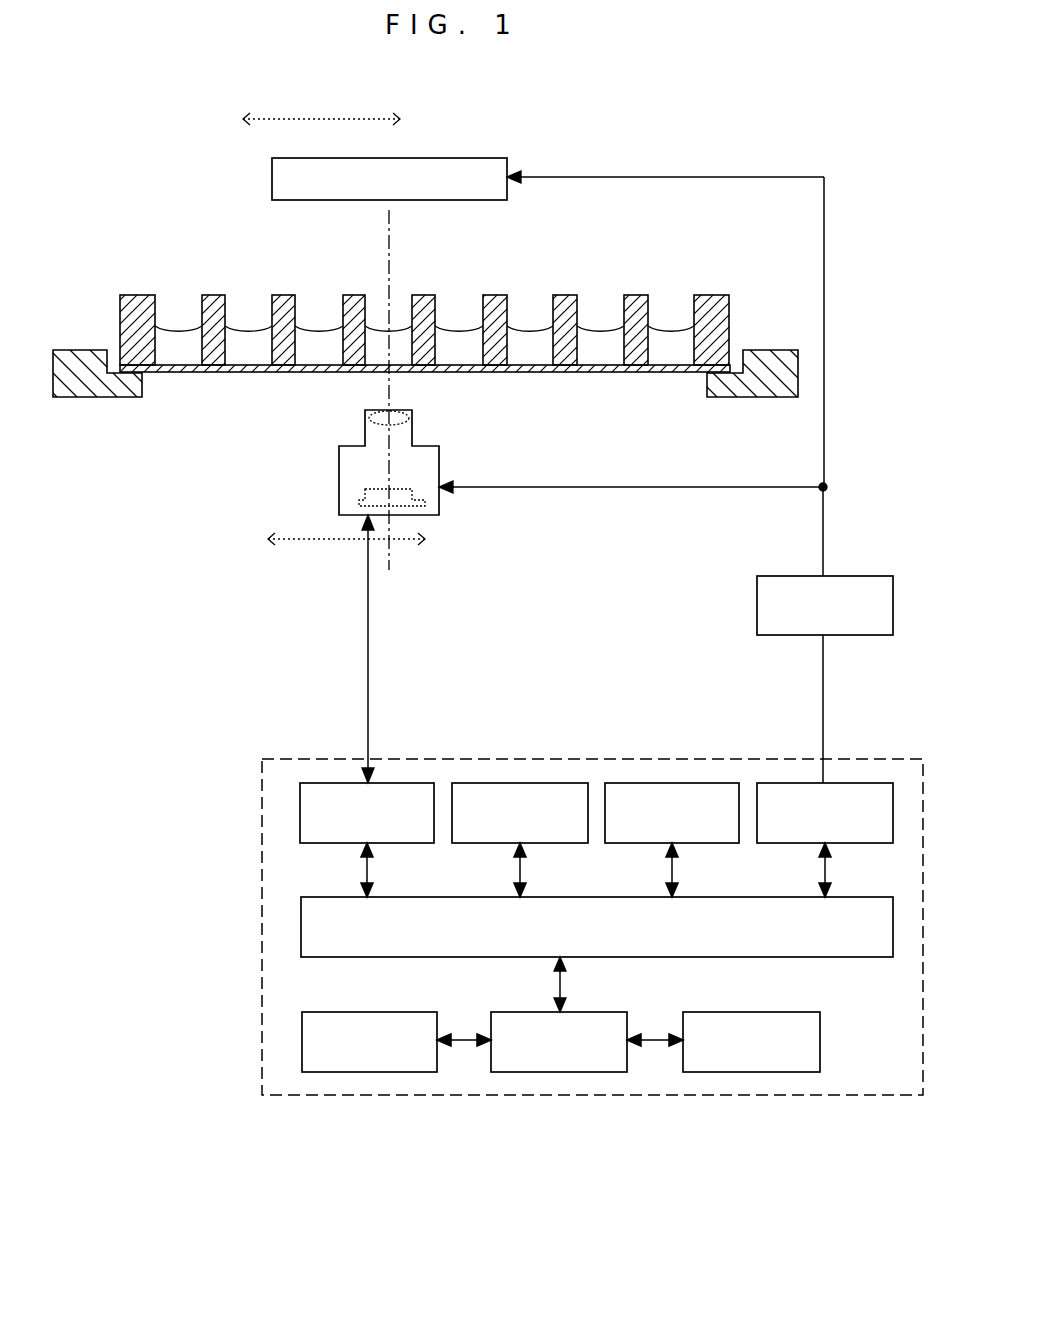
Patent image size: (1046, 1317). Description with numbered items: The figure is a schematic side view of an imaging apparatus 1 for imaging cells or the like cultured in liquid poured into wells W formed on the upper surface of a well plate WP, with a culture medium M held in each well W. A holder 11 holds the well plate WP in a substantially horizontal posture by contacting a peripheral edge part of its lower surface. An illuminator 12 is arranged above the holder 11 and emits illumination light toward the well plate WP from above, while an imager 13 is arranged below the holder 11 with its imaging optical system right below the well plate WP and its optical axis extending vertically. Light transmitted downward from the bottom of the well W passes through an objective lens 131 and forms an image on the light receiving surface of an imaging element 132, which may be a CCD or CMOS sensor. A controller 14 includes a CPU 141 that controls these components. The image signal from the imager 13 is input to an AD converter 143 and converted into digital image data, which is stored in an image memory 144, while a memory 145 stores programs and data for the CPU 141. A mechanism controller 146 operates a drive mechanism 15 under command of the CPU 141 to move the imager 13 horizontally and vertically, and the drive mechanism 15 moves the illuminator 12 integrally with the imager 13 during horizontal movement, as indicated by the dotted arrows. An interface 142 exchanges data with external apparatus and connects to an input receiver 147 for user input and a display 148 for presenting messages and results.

The imaging apparatus 1 is at (868, 184).
The holder 11 is at (90, 397).
The illuminator 12 is at (272, 182).
The imager 13 is at (339, 473).
The objective lens 131 is at (410, 418).
The imaging element 132 is at (420, 503).
The controller 14 is at (262, 805).
The CPU 141 is at (301, 937).
The interface 142 is at (555, 1072).
The AD converter 143 is at (411, 783).
The image memory 144 is at (545, 783).
The memory 145 is at (693, 783).
The mechanism controller 146 is at (855, 783).
The input receiver 147 is at (356, 1072).
The display 148 is at (745, 1072).
The drive mechanism 15 is at (868, 576).
The well plate WP is at (717, 295).
The well W is at (598, 310).
The culture medium M is at (241, 338).